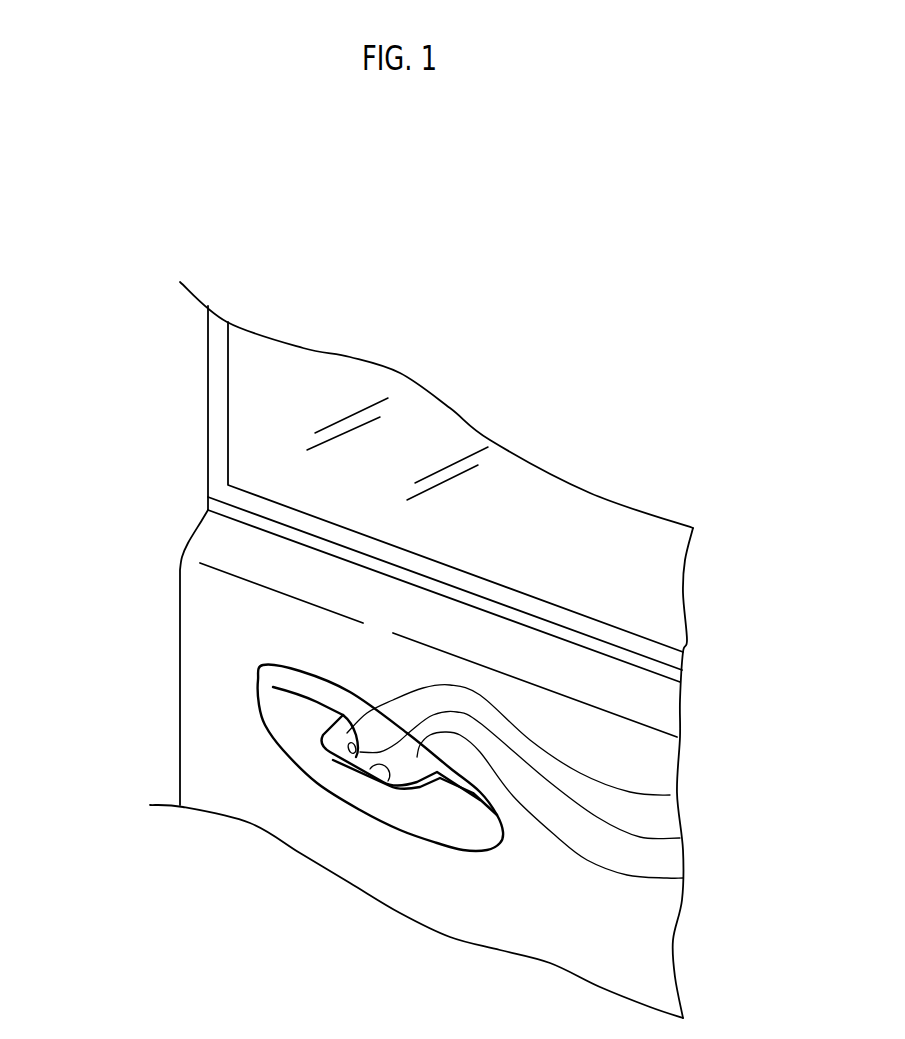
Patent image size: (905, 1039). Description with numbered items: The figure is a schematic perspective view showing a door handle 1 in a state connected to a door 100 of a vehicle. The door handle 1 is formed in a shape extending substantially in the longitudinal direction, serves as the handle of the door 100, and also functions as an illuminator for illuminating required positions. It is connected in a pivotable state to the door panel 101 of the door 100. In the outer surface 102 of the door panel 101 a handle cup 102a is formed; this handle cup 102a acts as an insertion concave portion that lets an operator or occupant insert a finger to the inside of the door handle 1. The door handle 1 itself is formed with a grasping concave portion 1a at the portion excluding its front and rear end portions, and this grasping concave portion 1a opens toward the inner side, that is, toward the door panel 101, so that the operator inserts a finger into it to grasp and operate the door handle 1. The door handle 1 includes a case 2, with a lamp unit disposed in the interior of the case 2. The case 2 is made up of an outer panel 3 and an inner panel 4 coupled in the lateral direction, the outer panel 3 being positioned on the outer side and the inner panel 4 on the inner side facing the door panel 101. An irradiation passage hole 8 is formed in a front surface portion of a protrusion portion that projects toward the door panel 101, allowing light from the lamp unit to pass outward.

The door handle 1 is at (427, 800).
The grasping concave portion 1a is at (378, 786).
The case 2 is at (437, 823).
The outer panel 3 is at (292, 715).
The inner panel 4 is at (670, 795).
The irradiation passage hole 8 is at (680, 838).
The door 100 is at (198, 612).
The door panel 101 is at (198, 672).
The outer surface 102 is at (198, 742).
The handle cup 102a is at (683, 878).